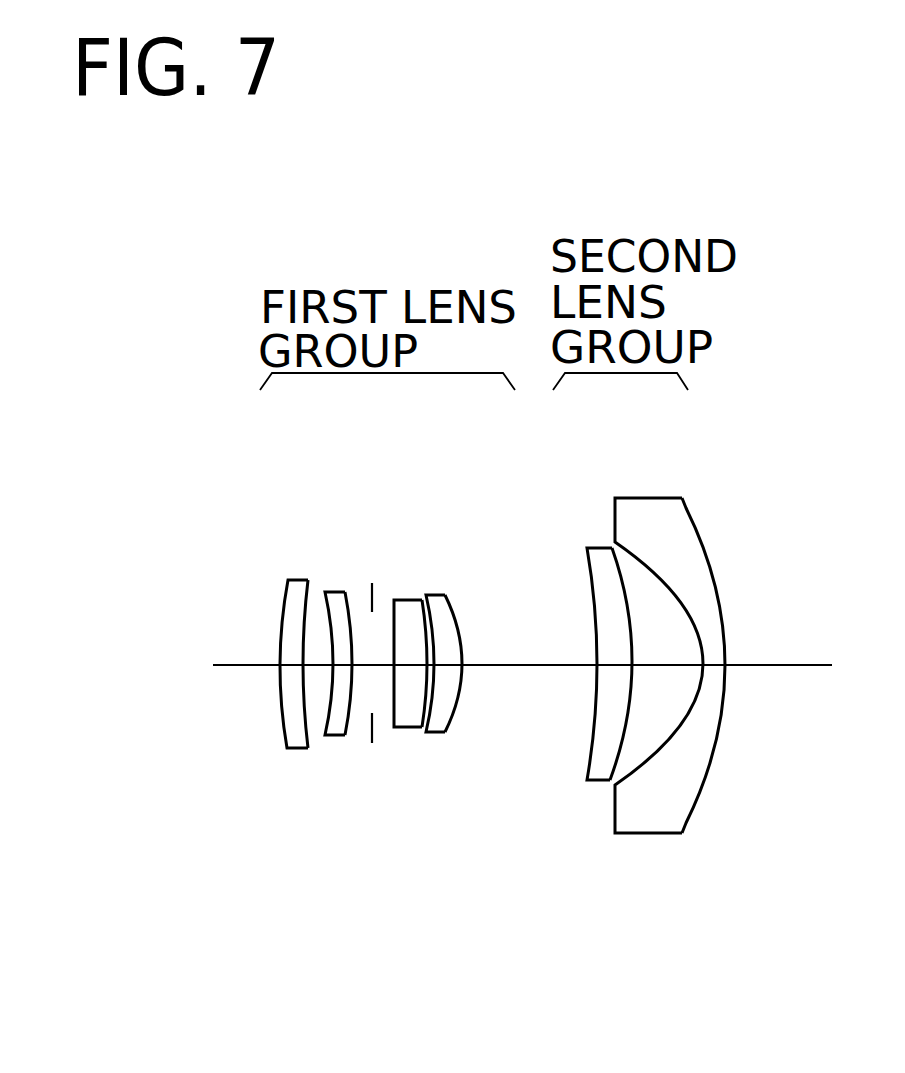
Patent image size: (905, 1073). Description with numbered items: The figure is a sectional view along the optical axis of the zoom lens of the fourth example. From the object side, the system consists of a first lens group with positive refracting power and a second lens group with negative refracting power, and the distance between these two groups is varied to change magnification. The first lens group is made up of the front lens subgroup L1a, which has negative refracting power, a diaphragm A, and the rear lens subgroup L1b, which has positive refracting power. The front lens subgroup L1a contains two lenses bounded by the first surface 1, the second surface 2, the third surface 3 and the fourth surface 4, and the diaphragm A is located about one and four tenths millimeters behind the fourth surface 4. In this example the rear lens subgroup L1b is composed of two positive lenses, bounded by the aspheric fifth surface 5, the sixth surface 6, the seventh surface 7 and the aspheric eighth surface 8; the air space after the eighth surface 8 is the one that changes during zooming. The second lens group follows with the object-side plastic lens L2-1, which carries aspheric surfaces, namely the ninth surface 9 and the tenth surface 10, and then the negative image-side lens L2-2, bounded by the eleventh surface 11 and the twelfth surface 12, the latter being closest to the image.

The first surface 1 is at (280, 732).
The second surface 2 is at (308, 732).
The third surface 3 is at (315, 733).
The fourth surface 4 is at (345, 730).
The fifth surface 5 is at (393, 728).
The sixth surface 6 is at (422, 713).
The seventh surface 7 is at (443, 732).
The eighth surface 8 is at (452, 710).
The ninth surface 9 is at (587, 750).
The tenth surface 10 is at (617, 753).
The eleventh surface 11 is at (680, 729).
The twelfth surface 12 is at (717, 738).
The diaphragm A is at (373, 597).
The 1a lens subgroup L1a is at (373, 477).
The 1b lens subgroup L1b is at (498, 477).
The (2-1)th lens L2-1 is at (600, 548).
The (2-2)th lens L2-2 is at (687, 460).